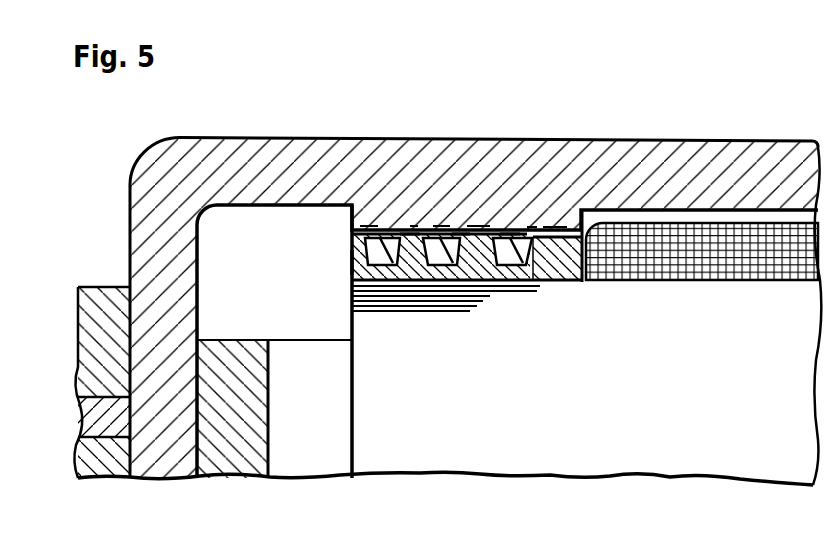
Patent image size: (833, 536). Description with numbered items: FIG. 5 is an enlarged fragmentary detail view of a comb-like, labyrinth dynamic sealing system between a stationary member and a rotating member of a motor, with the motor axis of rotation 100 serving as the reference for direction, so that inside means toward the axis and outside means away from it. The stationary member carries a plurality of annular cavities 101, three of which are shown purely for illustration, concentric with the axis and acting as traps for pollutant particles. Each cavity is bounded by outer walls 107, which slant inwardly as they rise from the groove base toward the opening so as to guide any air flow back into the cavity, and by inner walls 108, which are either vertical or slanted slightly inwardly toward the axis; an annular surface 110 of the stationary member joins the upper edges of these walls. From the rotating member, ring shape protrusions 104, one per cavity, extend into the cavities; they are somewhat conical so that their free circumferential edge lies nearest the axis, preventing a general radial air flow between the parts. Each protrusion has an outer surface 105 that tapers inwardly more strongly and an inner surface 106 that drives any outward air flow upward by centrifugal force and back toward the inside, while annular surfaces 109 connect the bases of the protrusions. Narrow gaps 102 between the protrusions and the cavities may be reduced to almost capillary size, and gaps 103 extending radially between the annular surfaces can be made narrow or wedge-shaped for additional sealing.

The motor axis of rotation 100 is at (832, 96).
The annular cavities 101 is at (508, 257).
The narrow gaps 102 is at (530, 258).
The gaps 103 is at (557, 228).
The ring shape protrusions 104 is at (438, 253).
The outer surface 105 is at (392, 247).
The inner surface 106 is at (460, 226).
The outer walls 107 is at (352, 262).
The inner walls 108 is at (511, 232).
The annular surfaces 109 is at (413, 227).
The annular surface 110 is at (423, 226).